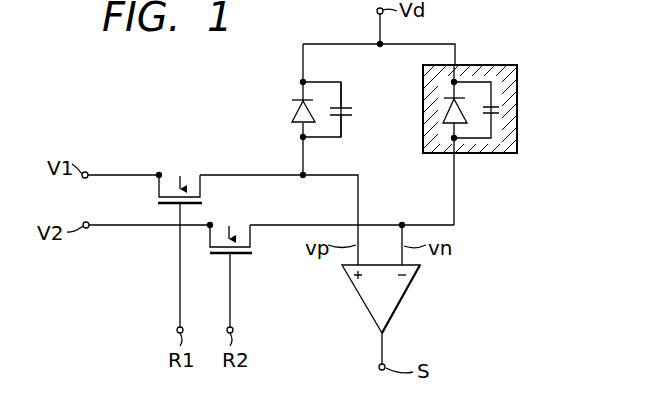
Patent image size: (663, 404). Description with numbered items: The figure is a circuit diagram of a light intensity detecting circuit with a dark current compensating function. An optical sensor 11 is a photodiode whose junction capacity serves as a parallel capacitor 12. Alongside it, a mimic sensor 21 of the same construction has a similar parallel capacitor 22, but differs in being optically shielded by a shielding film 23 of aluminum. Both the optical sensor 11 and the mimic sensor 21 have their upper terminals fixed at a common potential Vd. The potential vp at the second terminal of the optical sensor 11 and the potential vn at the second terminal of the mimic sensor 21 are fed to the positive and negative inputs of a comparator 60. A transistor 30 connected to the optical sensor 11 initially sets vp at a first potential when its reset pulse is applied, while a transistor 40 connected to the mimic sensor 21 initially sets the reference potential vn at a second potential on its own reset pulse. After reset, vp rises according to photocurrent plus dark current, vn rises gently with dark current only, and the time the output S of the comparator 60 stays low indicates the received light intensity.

The optical sensor 11 is at (290, 110).
The parallel capacitor 12 is at (352, 112).
The mimic sensor 21 is at (463, 110).
The parallel capacitor 22 is at (503, 107).
The shielding film 23 is at (520, 142).
The transistor 30 is at (188, 182).
The transistor 40 is at (243, 258).
The comparator 60 is at (400, 308).